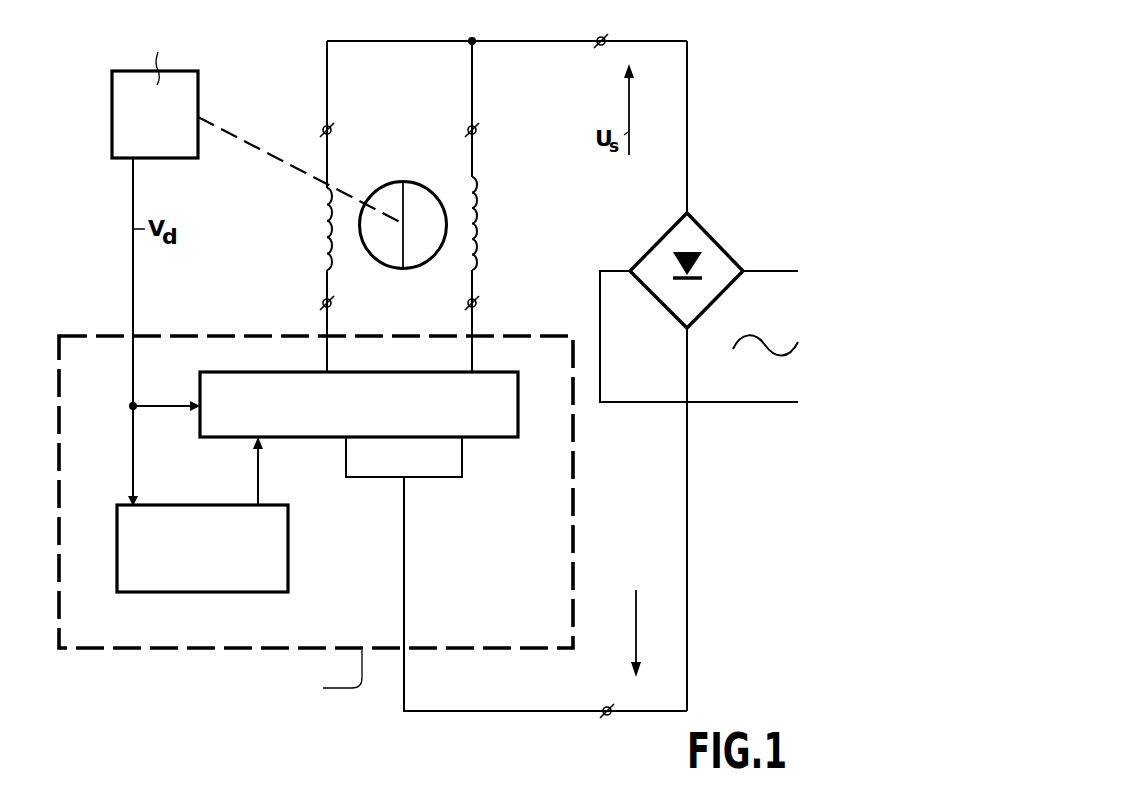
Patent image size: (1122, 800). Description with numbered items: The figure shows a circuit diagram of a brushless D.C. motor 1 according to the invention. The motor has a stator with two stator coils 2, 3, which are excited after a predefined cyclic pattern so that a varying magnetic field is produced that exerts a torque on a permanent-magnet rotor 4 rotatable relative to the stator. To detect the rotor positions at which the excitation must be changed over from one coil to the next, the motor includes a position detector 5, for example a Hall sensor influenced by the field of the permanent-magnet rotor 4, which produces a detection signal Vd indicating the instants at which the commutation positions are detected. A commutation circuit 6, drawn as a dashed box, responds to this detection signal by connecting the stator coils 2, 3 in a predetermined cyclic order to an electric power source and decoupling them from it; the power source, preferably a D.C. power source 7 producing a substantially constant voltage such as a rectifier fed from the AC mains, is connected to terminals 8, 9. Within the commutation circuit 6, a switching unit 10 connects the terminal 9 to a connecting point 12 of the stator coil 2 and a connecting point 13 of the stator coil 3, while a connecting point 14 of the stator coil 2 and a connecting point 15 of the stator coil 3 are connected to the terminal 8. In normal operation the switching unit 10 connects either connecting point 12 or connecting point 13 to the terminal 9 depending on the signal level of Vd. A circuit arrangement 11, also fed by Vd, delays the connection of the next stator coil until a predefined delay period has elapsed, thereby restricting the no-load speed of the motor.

The brushless D.C. motor 1 is at (370, 23).
The stator coil 2 is at (323, 242).
The stator coil 3 is at (480, 232).
The permanent-magnet rotor 4 is at (404, 180).
The position detector 5 is at (198, 80).
The commutation circuit 6 is at (133, 651).
The D.C. power source 7 is at (727, 245).
The terminal 8 is at (601, 36).
The terminal 9 is at (607, 716).
The switching unit 10 is at (491, 440).
The circuit arrangement 11 is at (288, 570).
The connecting point 12 is at (322, 303).
The connecting point 13 is at (477, 303).
The connecting point 14 is at (332, 128).
The connecting point 15 is at (468, 128).